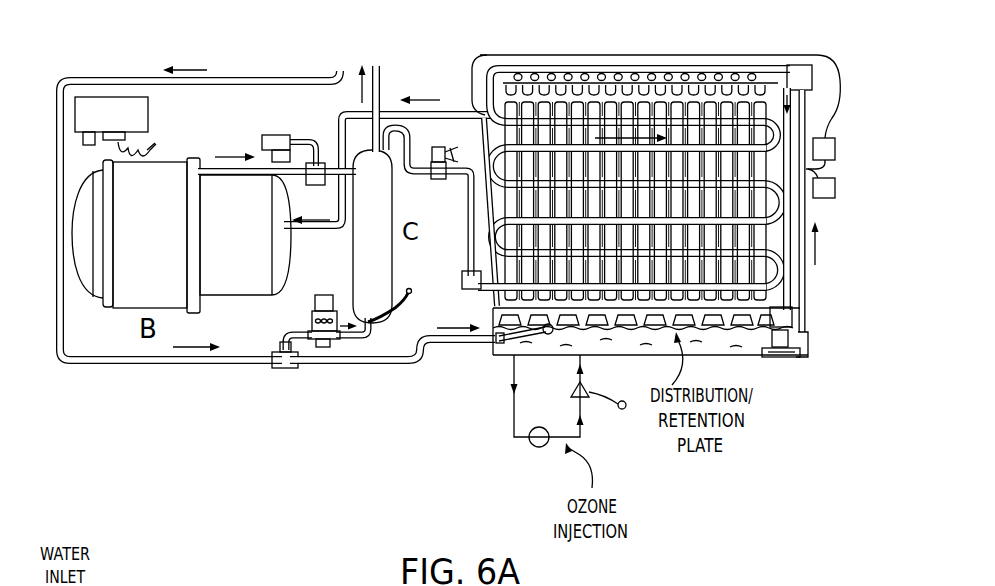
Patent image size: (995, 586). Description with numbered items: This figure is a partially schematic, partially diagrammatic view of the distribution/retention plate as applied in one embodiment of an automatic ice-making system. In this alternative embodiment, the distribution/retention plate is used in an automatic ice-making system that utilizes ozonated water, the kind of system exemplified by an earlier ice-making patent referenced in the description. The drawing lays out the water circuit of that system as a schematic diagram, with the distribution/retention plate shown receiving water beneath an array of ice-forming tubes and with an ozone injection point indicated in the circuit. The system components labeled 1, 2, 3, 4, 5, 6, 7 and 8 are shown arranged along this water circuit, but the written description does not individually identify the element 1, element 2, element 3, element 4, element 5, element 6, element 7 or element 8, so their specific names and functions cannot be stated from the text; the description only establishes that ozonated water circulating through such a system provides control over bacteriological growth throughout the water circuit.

The temperature sensor 1 is at (825, 198).
The control switch 2 is at (835, 150).
The pump motor unit 3 is at (148, 118).
The solenoid valve 4 is at (310, 321).
The flow control valve 5 is at (443, 180).
The T-fitting 6 is at (458, 283).
The water inlet pipe 7 is at (490, 347).
The drain fitting 8 is at (786, 372).